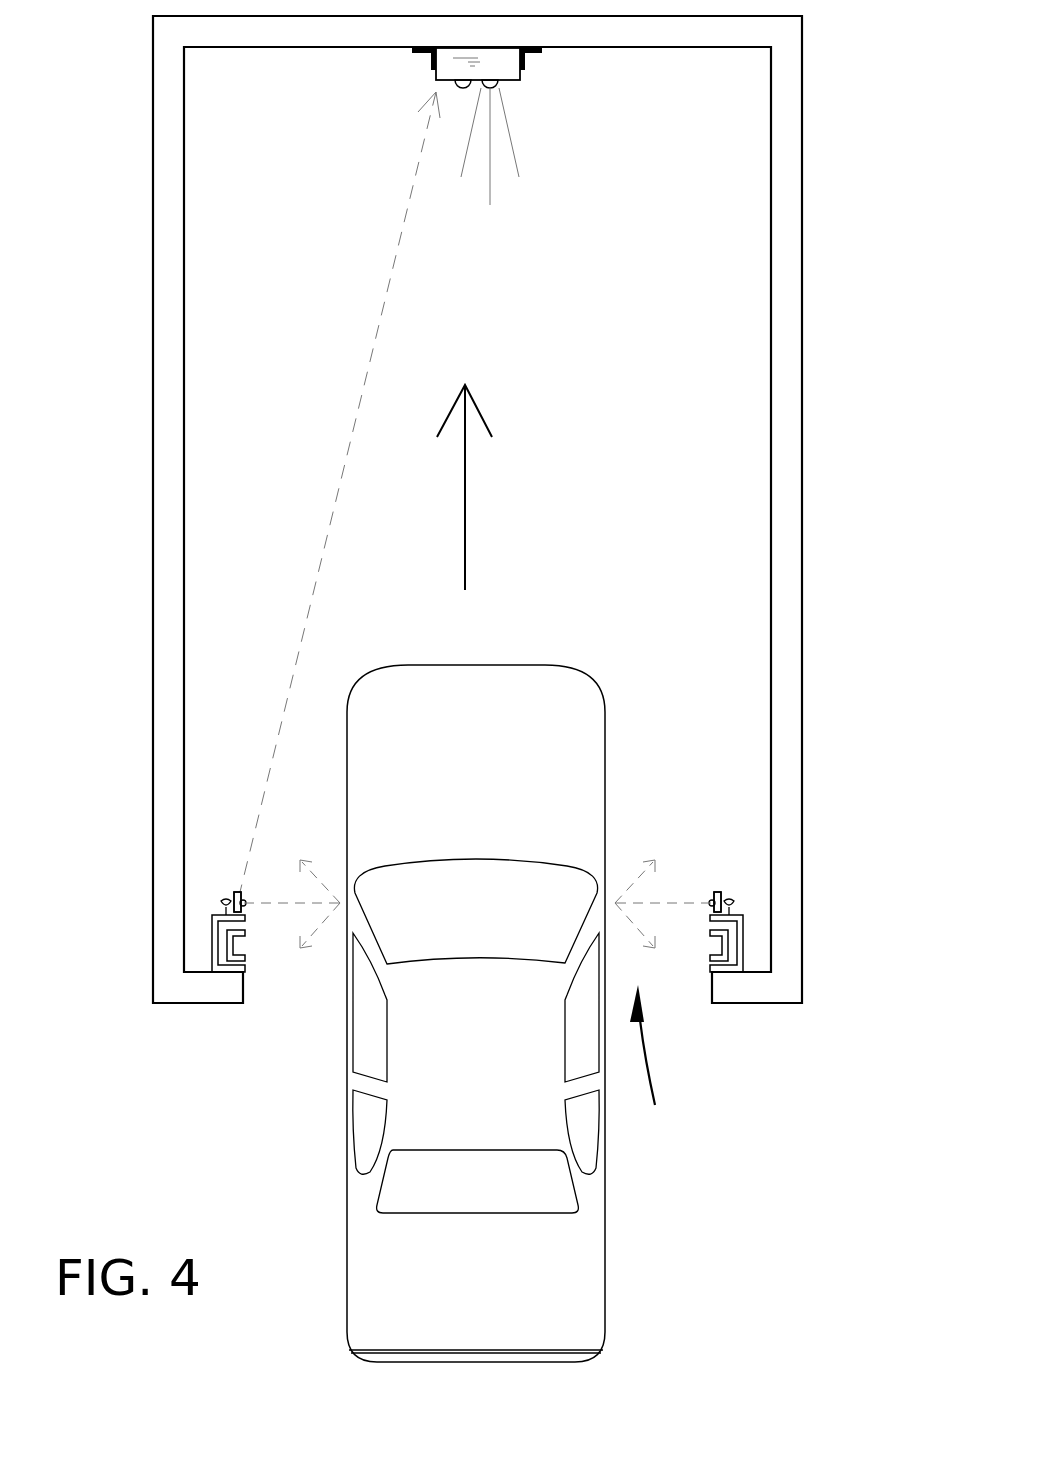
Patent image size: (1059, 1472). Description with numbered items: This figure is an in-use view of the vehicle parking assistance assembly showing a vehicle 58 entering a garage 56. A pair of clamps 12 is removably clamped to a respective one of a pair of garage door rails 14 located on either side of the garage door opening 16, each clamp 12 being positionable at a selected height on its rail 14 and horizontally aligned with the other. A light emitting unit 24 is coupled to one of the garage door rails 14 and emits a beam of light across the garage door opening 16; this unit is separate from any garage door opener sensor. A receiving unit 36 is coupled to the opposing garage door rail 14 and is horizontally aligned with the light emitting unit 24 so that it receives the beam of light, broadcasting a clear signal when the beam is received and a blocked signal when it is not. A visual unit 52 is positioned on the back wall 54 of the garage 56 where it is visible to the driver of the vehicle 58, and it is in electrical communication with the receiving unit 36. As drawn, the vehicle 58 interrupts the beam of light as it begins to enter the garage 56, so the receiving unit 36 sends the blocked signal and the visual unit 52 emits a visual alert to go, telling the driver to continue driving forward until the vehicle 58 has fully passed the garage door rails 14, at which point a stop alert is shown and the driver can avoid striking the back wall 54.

The clamp 12 is at (213, 946).
The garage door rail 14 is at (246, 932).
The garage door opening 16 is at (662, 1069).
The light emitting unit 24 is at (238, 892).
The receiving unit 36 is at (722, 892).
The visual unit 52 is at (520, 65).
The back wall 54 is at (270, 47).
The garage 56 is at (122, 476).
The vehicle 58 is at (600, 700).